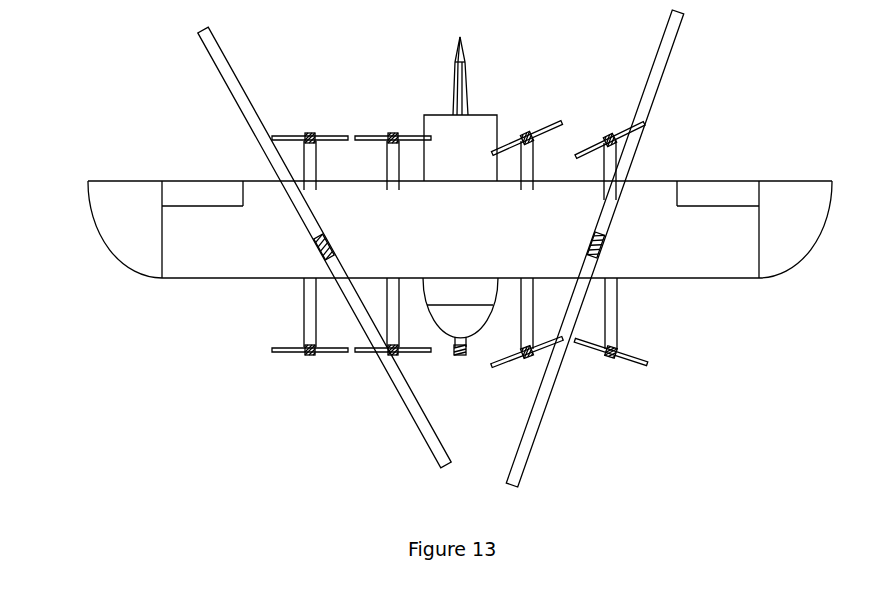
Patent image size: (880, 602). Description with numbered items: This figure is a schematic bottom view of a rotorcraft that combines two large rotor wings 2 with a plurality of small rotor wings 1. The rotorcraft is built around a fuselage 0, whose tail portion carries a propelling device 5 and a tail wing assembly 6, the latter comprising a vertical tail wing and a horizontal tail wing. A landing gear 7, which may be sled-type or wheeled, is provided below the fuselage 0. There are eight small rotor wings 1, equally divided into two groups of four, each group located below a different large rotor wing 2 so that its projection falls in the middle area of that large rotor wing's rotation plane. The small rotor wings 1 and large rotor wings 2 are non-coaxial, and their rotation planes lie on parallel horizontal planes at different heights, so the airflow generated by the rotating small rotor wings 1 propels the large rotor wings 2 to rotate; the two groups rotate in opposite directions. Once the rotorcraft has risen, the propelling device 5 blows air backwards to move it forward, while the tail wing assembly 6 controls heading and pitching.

The fuselage 0 is at (127, 250).
The small rotor wing 1 is at (332, 135).
The large rotor wing 2 is at (206, 50).
The propelling device 5 is at (442, 115).
The tail wing assembly 6 is at (457, 75).
The landing gear 7 is at (462, 356).